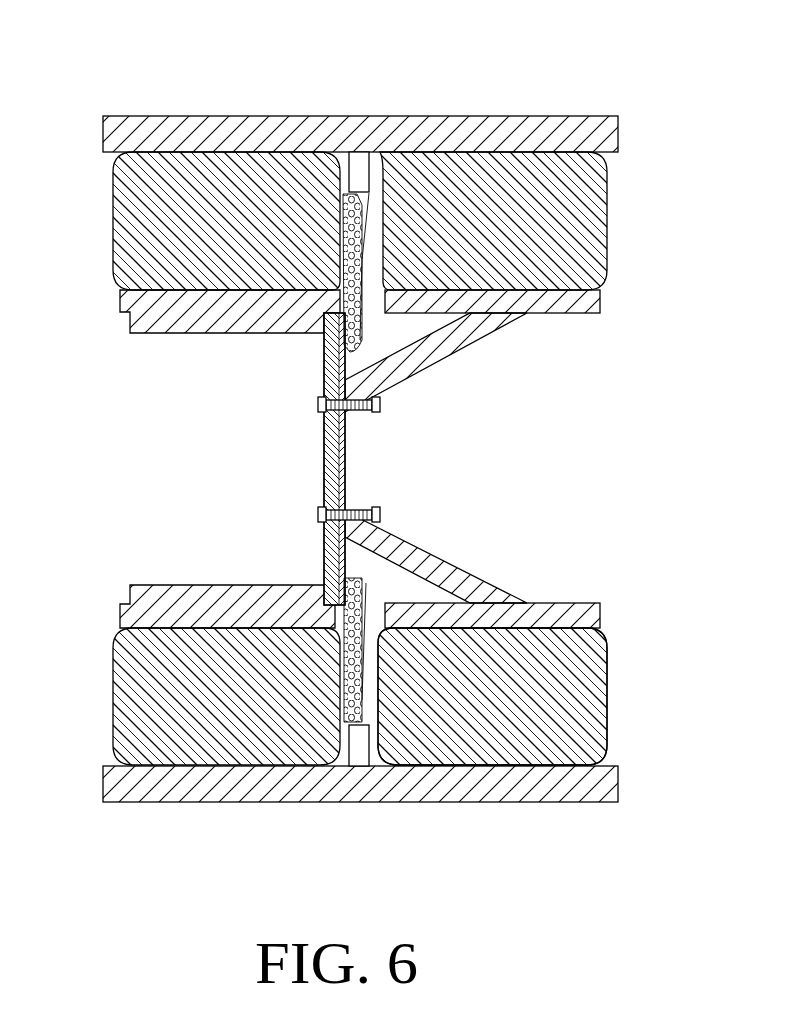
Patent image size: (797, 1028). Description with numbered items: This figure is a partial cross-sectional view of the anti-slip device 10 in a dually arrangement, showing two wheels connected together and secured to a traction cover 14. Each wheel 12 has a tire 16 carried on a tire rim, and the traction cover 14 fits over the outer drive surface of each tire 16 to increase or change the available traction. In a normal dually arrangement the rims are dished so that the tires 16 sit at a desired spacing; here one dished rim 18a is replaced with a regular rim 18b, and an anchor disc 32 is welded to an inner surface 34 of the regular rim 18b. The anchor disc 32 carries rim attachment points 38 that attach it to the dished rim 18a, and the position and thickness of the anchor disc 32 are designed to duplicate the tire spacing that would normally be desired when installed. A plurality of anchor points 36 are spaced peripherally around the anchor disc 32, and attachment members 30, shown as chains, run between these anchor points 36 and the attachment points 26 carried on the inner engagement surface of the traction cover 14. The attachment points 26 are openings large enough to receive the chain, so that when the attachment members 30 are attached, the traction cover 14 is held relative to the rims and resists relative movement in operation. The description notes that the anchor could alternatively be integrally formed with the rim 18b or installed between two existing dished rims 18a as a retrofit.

The anti-slip device 10 is at (90, 66).
The wheel 12 is at (593, 673).
The traction cover 14 is at (600, 140).
The tire 16 is at (592, 225).
The dished rim 18a is at (550, 615).
The regular rim 18b is at (183, 603).
The attachment point 26 is at (360, 172).
The attachment member 30 is at (363, 212).
The anchor disc 32 is at (337, 562).
The inner surface of rim 34 is at (325, 320).
The anchor point 36 is at (360, 342).
The rim attachment point 38 is at (320, 406).